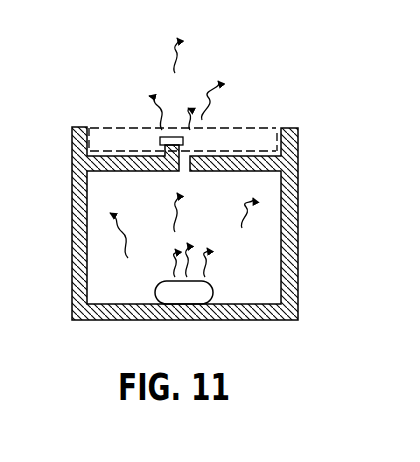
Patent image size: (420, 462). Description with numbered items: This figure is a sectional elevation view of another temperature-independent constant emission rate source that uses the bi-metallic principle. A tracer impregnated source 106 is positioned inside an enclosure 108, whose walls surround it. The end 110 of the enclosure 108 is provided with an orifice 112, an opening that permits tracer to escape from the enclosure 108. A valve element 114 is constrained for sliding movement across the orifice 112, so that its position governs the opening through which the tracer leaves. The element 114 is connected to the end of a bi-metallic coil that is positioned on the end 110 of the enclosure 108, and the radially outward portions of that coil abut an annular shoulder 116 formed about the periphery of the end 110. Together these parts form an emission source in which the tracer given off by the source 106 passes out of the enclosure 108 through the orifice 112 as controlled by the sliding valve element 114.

The tracer impregnated source 106 is at (250, 253).
The enclosure 108 is at (72, 239).
The end of the enclosure 110 is at (128, 163).
The orifice 112 is at (184, 174).
The valve element 114 is at (172, 136).
The annular shoulder 116 is at (275, 151).